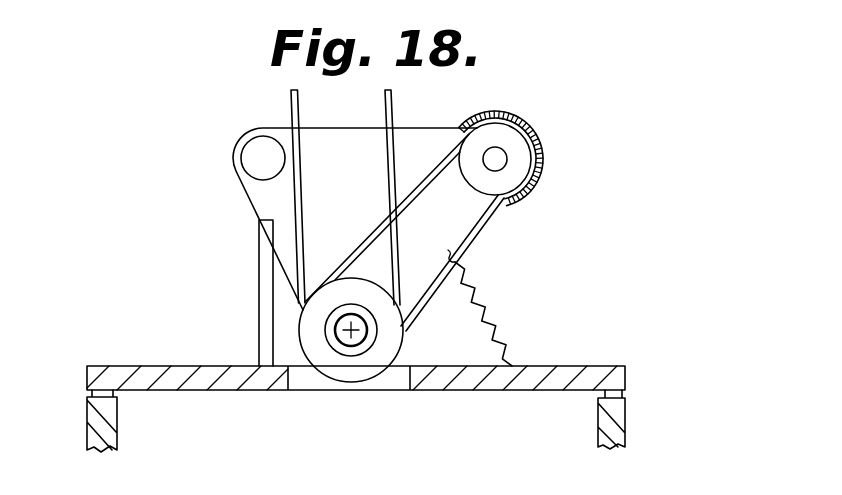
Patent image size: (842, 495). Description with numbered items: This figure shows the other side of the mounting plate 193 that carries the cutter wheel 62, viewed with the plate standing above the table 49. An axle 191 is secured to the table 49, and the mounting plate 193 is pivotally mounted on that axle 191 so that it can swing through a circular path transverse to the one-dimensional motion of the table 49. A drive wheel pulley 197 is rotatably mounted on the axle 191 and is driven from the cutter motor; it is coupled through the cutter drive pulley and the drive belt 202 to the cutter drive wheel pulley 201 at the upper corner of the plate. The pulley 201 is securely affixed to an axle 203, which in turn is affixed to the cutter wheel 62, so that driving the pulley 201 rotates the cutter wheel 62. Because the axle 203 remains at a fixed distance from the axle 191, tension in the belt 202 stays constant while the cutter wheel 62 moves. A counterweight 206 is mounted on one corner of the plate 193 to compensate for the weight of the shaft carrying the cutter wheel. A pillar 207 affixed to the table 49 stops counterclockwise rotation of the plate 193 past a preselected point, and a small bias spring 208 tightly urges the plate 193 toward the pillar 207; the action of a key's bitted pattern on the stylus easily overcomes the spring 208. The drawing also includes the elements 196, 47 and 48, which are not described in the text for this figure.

The support block 47 is at (625, 423).
The support block 48 is at (85, 417).
The table 49 is at (114, 372).
The cutter wheel 62 is at (547, 148).
The axle 191 is at (357, 340).
The mounting plate 193 is at (250, 203).
The guide rods 196 is at (393, 112).
The drive wheel pulley 197 is at (323, 360).
The cutter drive wheel pulley 201 is at (522, 168).
The drive belt 202 is at (487, 229).
The axle 203 is at (500, 158).
The counterweight 206 is at (246, 156).
The pillar 207 is at (259, 268).
The bias spring 208 is at (483, 302).